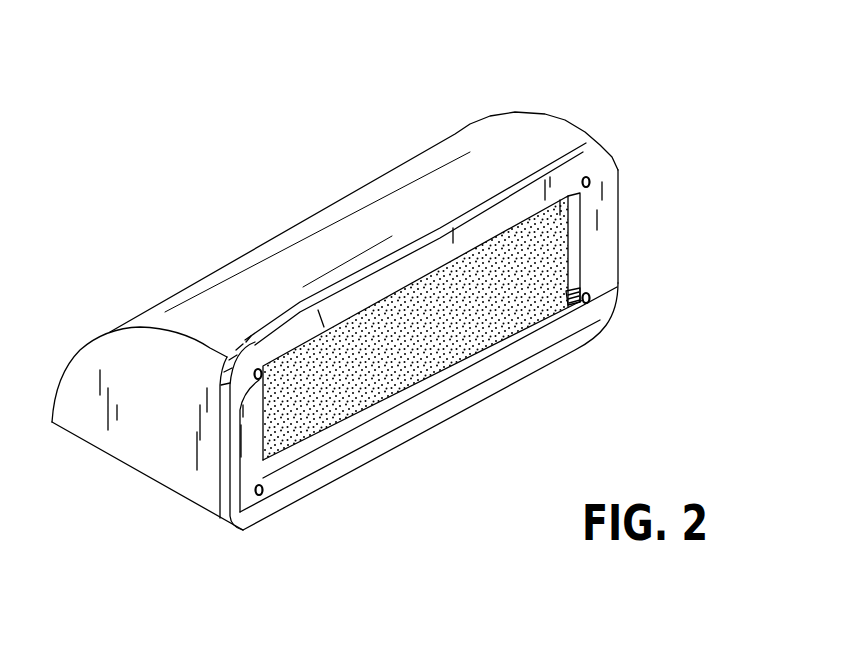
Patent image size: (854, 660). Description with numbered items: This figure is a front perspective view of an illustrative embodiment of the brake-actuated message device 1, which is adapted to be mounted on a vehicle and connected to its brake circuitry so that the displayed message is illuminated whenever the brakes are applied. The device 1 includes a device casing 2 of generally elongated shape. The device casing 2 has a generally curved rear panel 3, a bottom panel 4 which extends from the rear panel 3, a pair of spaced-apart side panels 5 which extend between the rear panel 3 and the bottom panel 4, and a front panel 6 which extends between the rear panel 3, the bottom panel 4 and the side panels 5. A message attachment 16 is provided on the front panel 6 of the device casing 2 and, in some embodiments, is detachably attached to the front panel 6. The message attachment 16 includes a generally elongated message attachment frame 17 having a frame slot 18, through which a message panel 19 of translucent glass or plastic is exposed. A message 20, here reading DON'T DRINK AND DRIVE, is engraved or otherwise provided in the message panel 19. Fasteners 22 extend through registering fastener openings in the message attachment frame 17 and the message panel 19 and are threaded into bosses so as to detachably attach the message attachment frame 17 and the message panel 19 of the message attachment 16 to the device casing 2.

The brake-actuated message device 1 is at (245, 175).
The device casing 2 is at (167, 300).
The rear panel 3 is at (250, 267).
The bottom panel 4 is at (186, 497).
The side panels 5 is at (114, 432).
The front panel 6 is at (572, 137).
The message attachment 16 is at (620, 314).
The message attachment frame 17 is at (353, 452).
The frame slot 18 is at (316, 445).
The message panel 19 is at (423, 326).
The message 20 is at (470, 340).
The fasteners 22 is at (260, 495).